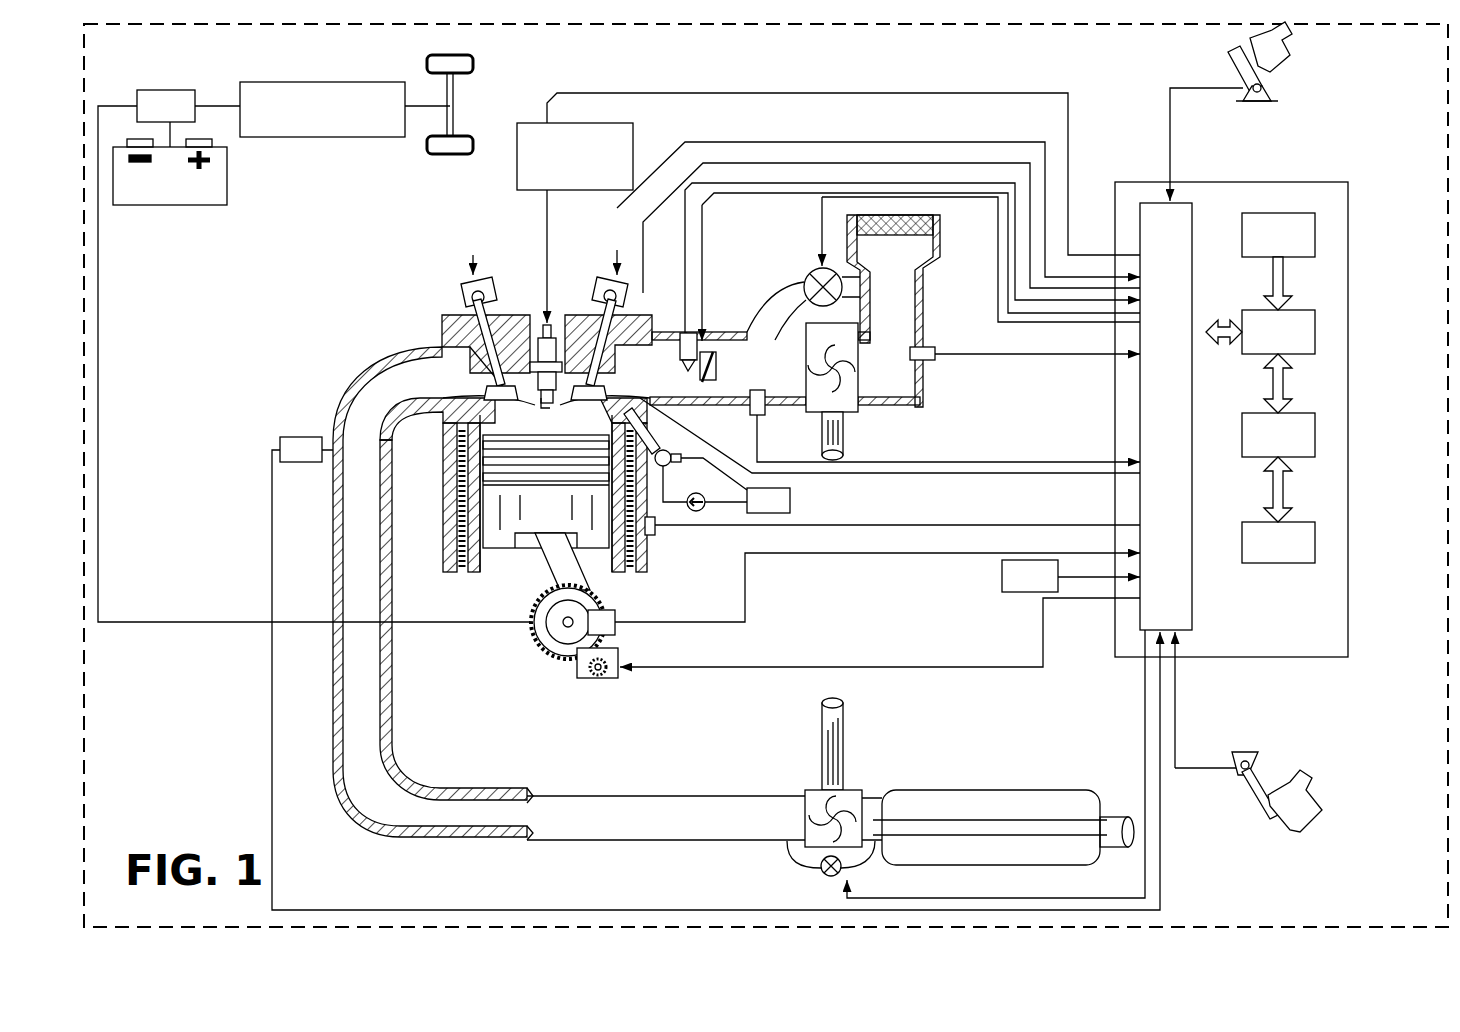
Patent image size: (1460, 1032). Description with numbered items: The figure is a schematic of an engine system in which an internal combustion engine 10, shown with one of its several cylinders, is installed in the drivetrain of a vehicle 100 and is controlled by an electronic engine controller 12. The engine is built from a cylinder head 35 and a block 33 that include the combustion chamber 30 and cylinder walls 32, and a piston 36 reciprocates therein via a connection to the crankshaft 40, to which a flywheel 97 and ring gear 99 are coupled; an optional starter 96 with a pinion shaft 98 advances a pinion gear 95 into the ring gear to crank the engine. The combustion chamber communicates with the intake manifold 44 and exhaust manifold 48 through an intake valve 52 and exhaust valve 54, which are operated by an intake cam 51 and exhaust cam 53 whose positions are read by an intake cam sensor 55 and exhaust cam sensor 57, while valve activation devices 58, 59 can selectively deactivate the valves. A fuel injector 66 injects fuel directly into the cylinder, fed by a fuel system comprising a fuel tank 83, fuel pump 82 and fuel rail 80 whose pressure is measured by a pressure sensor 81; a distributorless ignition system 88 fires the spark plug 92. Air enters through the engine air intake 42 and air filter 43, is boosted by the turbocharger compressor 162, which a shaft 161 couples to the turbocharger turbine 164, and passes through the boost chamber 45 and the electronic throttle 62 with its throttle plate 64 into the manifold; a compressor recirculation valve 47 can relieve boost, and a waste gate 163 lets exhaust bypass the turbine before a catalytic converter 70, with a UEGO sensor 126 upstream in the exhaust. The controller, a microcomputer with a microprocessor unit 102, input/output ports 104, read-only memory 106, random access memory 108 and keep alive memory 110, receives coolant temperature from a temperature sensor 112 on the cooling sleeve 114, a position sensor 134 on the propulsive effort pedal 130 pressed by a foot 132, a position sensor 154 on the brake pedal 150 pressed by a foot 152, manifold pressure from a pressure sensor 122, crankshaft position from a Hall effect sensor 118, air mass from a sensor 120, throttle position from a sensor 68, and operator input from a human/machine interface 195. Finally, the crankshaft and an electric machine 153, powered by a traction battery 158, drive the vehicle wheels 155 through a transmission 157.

The internal combustion engine 10 is at (374, 266).
The electronic engine controller 12 is at (1348, 183).
The combustion chamber 30 is at (545, 415).
The cylinder walls 32 is at (488, 560).
The block 33 is at (438, 446).
The cylinder head 35 is at (438, 316).
The piston 36 is at (530, 518).
The crankshaft 40 is at (545, 648).
The engine air intake 42 is at (772, 238).
The air filter 43 is at (905, 236).
The intake manifold 44 is at (683, 384).
The boost chamber 45 is at (780, 384).
The compressor recirculation valve 47 is at (810, 272).
The exhaust manifold 48 is at (425, 389).
The intake cam 51 is at (612, 283).
The intake valve 52 is at (594, 376).
The exhaust cam 53 is at (480, 285).
The exhaust valve 54 is at (485, 362).
The intake cam sensor 55 is at (633, 305).
The exhaust cam sensor 57 is at (466, 288).
The valve activation device 58 is at (492, 300).
The valve activation device 59 is at (618, 308).
The electronic throttle 62 is at (712, 374).
The throttle plate 64 is at (750, 398).
The fuel injector 66 is at (665, 446).
The throttle position sensor 68 is at (686, 341).
The catalytic converter 70 is at (925, 790).
The fuel rail 80 is at (677, 484).
The pressure sensor 81 is at (714, 480).
The fuel pump 82 is at (704, 507).
The fuel tank 83 is at (768, 500).
The distributorless ignition system 88 is at (632, 124).
The spark plug 92 is at (553, 326).
The pinion gear 95 is at (600, 686).
The starter 96 is at (615, 679).
The flywheel 97 is at (541, 626).
The pinion shaft 98 is at (592, 680).
The ring gear 99 is at (558, 658).
The vehicle 100 is at (86, 663).
The microprocessor unit 102 is at (1315, 335).
The input/output ports 104 is at (1192, 213).
The read-only memory 106 is at (1315, 233).
The random access memory 108 is at (1315, 437).
The keep alive memory 110 is at (1315, 542).
The temperature sensor 112 is at (656, 527).
The cooling sleeve 114 is at (650, 540).
The Hall effect sensor 118 is at (615, 612).
The air mass sensor 120 is at (930, 348).
The pressure sensor 122 is at (756, 412).
The universal exhaust gas oxygen sensor 126 is at (280, 440).
The propulsive effort pedal 130 is at (1235, 60).
The foot 132 is at (1288, 55).
The position sensor 134 is at (1275, 92).
The brake pedal 150 is at (1262, 795).
The foot 152 is at (1300, 788).
The electric machine 153 is at (180, 90).
The position sensor 154 is at (1240, 768).
The vehicle wheels 155 is at (462, 73).
The transmission 157 is at (338, 137).
The traction battery 158 is at (165, 205).
The shaft 161 is at (822, 432).
The turbocharger compressor 162 is at (843, 405).
The waste gate 163 is at (828, 876).
The turbocharger turbine 164 is at (805, 790).
The human/machine interface 195 is at (1071, 576).